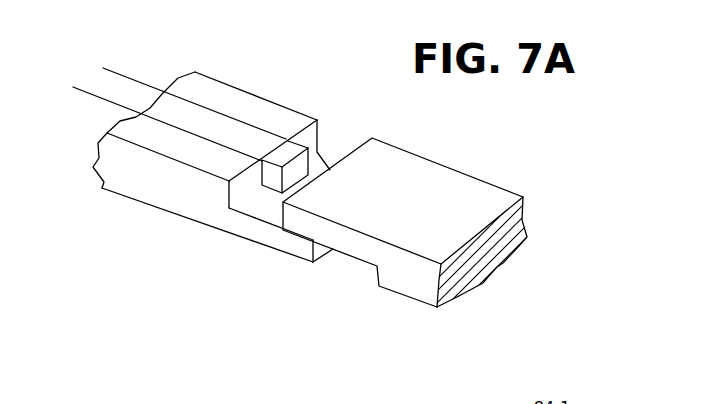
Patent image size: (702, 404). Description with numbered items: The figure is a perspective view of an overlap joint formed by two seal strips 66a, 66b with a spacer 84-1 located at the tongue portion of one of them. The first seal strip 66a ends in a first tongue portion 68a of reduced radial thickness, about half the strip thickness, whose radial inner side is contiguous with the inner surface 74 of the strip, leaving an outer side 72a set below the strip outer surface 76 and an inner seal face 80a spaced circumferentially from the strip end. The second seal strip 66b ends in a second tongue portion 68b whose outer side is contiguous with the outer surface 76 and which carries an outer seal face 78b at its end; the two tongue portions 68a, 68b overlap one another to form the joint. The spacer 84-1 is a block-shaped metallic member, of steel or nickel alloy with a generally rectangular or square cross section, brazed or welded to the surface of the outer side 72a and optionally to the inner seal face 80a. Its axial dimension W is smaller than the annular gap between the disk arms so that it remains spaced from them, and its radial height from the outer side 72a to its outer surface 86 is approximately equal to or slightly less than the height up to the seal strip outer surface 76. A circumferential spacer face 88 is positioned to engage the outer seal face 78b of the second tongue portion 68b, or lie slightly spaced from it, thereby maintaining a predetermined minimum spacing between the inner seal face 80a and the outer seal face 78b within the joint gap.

The axial dimension of the spacer W is at (57, 115).
The seal strip 66a is at (135, 173).
The seal strip 66b is at (385, 293).
The first tongue portion 68a is at (292, 245).
The second tongue portion 68b is at (390, 180).
The outer side of the tongue portion 72a is at (255, 208).
The radial inner surface 74 is at (145, 203).
The radial outer surface 76 is at (146, 133).
The outer seal face 78b is at (272, 203).
The inner seal face 80a is at (240, 185).
The spacer 84-1 is at (293, 140).
The outer surface of the spacer 86 is at (283, 140).
The circumferential spacer face 88 is at (300, 168).